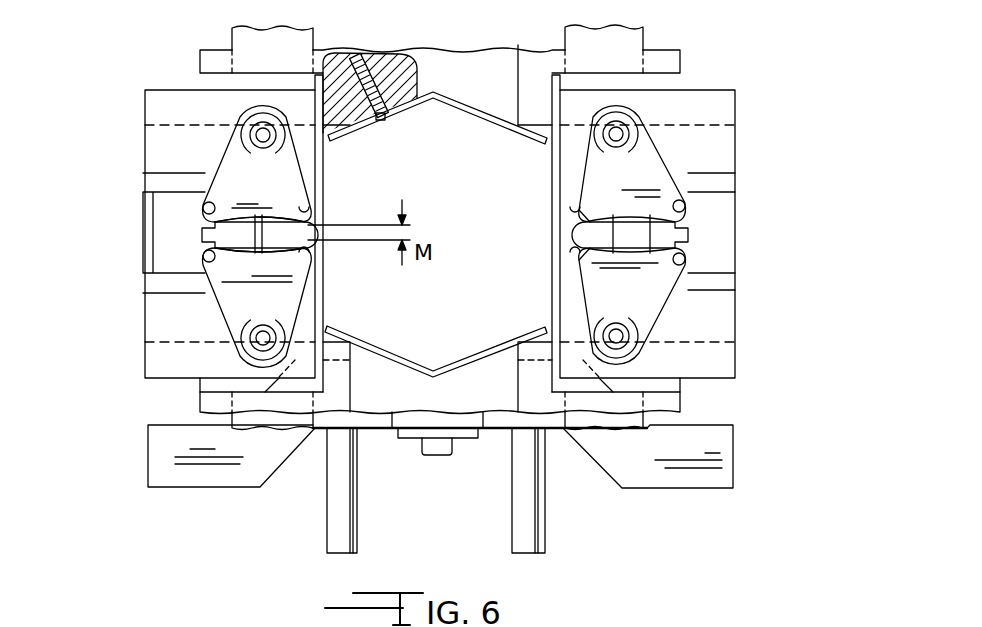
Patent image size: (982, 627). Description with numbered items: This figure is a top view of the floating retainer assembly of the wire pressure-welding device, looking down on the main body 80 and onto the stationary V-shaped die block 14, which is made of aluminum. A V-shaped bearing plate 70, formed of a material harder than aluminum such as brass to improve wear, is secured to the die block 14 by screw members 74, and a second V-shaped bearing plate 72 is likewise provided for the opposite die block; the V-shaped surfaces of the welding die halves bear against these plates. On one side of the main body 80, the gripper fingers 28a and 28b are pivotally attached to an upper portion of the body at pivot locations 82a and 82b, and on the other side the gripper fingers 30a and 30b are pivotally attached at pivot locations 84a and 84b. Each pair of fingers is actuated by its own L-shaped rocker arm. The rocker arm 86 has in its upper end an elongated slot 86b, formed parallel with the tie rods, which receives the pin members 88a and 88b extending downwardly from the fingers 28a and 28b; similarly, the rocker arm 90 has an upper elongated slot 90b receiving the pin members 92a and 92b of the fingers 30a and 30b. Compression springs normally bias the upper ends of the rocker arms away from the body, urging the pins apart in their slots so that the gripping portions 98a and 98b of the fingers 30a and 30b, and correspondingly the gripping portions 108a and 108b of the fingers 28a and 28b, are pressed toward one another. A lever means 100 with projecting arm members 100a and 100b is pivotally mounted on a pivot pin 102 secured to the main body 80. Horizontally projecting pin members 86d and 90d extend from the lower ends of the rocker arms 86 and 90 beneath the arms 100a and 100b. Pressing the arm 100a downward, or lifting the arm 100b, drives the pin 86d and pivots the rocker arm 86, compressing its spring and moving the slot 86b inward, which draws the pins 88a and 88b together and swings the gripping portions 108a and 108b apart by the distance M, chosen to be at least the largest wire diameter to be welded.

The stationary V-shaped die block 14 is at (450, 72).
The gripper finger 28a is at (305, 193).
The gripper finger 28b is at (283, 296).
The gripper finger 30a is at (580, 200).
The gripper finger 30b is at (597, 285).
The V-shaped bearing plate 70 is at (472, 110).
The V-shaped bearing plate 72 is at (463, 364).
The screw members 74 is at (386, 118).
The main body 80 is at (735, 318).
The pivot location 82a is at (290, 138).
The pivot location 82b is at (266, 338).
The pivot location 84a is at (608, 136).
The pivot location 84b is at (617, 330).
The L-shaped rocker arm 86 is at (178, 242).
The elongated slot 86b is at (200, 233).
The horizontally projecting pin member 86d is at (327, 533).
The pin member 88a is at (203, 200).
The pin member 88b is at (203, 262).
The L-shaped rocker arm 90 is at (735, 238).
The upper elongated slot 90b is at (700, 233).
The horizontally projecting pin member 90d is at (547, 533).
The pin member 92a is at (688, 207).
The pin member 92b is at (688, 260).
The gripping portion 98a is at (580, 232).
The gripping portion 98b is at (587, 250).
The lever means 100 is at (378, 431).
The lever arm member 100a is at (200, 467).
The lever arm member 100b is at (697, 477).
The pivot pin 102 is at (453, 457).
The gripping portion 108a is at (310, 200).
The gripping portion 108b is at (312, 258).